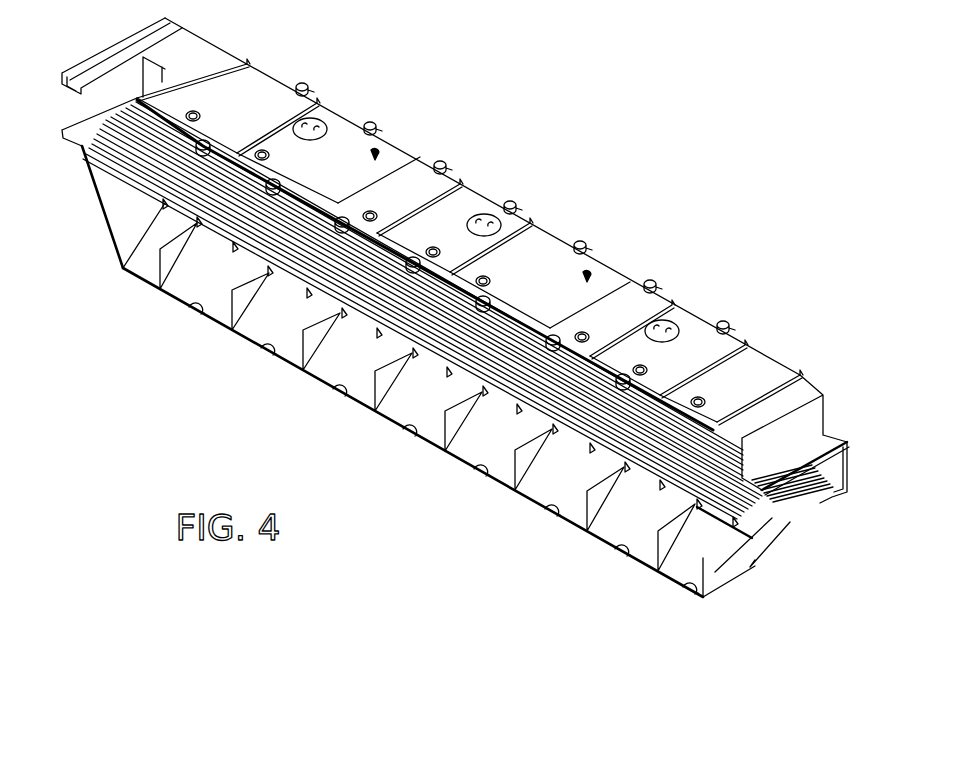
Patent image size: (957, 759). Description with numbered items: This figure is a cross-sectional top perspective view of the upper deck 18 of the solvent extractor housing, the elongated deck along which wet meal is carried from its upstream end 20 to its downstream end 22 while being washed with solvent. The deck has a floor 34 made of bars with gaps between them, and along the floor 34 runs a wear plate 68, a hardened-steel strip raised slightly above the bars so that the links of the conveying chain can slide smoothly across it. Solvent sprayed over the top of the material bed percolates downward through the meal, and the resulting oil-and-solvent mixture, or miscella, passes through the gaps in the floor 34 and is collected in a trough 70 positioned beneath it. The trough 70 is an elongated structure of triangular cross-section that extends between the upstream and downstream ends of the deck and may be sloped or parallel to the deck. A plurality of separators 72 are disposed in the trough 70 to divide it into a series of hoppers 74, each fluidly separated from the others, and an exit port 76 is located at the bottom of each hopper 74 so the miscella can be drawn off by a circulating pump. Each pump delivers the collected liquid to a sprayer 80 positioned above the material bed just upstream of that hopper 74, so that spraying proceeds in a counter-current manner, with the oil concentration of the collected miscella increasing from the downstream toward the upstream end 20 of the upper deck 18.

The upper deck 18 is at (676, 266).
The upstream end 20 is at (93, 117).
The downstream end 22 is at (793, 507).
The floor 34 is at (125, 122).
The wear plate 68 is at (99, 165).
The trough 70 is at (130, 224).
The separator 72 is at (166, 258).
The hopper 74 is at (260, 318).
The exit port 76 is at (340, 390).
The sprayer 80 is at (364, 221).